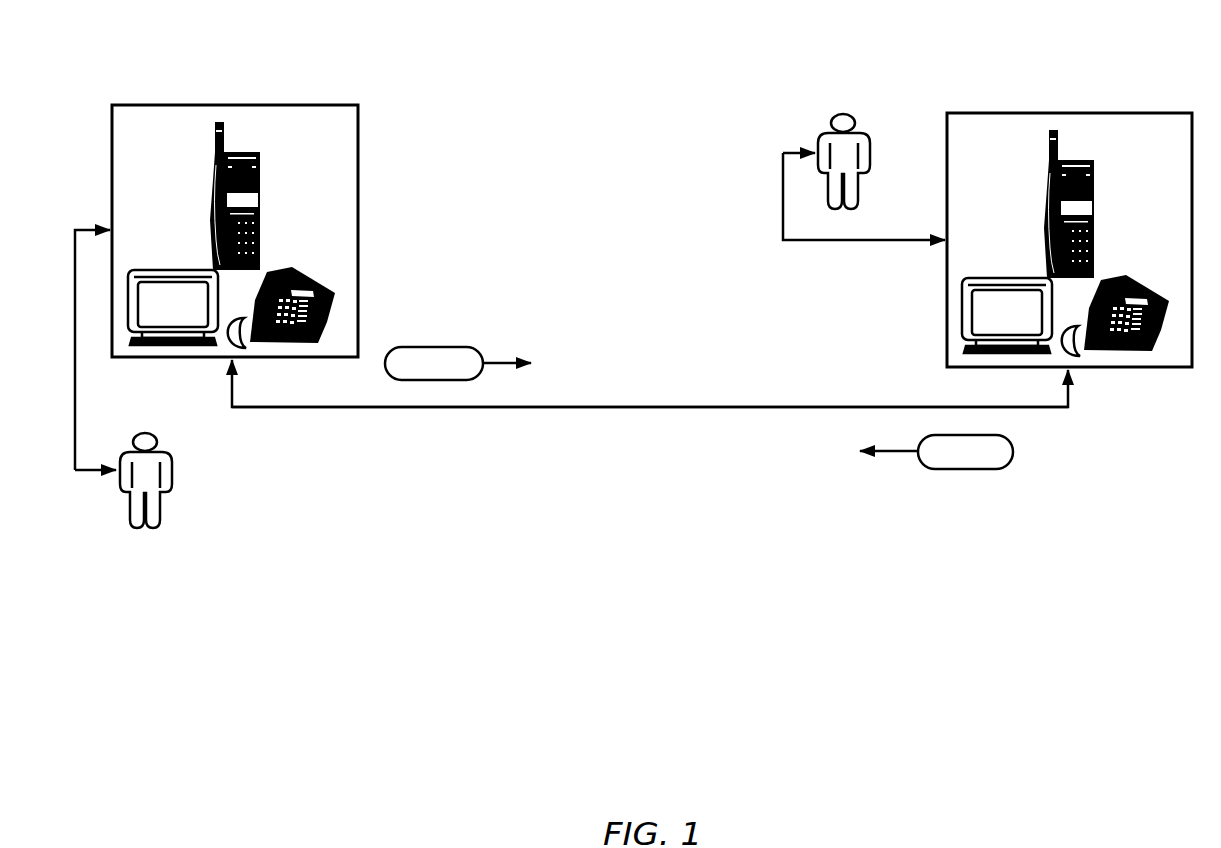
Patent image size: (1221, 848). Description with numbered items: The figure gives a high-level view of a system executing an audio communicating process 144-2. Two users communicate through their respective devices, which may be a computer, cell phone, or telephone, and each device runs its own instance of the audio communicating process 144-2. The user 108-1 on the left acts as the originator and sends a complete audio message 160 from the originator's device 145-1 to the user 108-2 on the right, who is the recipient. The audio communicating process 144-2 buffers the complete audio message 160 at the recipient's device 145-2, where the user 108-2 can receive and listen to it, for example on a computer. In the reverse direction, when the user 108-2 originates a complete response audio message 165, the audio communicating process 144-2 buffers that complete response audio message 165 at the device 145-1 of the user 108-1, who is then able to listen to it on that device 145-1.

The originator's device 145-1 is at (187, 97).
The recipient's device 145-2 is at (1044, 104).
The audio communicating process 144-2 is at (336, 187).
The complete response audio message 165 is at (198, 319).
The complete audio message 160 is at (1013, 331).
The user 108-1 is at (130, 498).
The user 108-2 is at (848, 101).